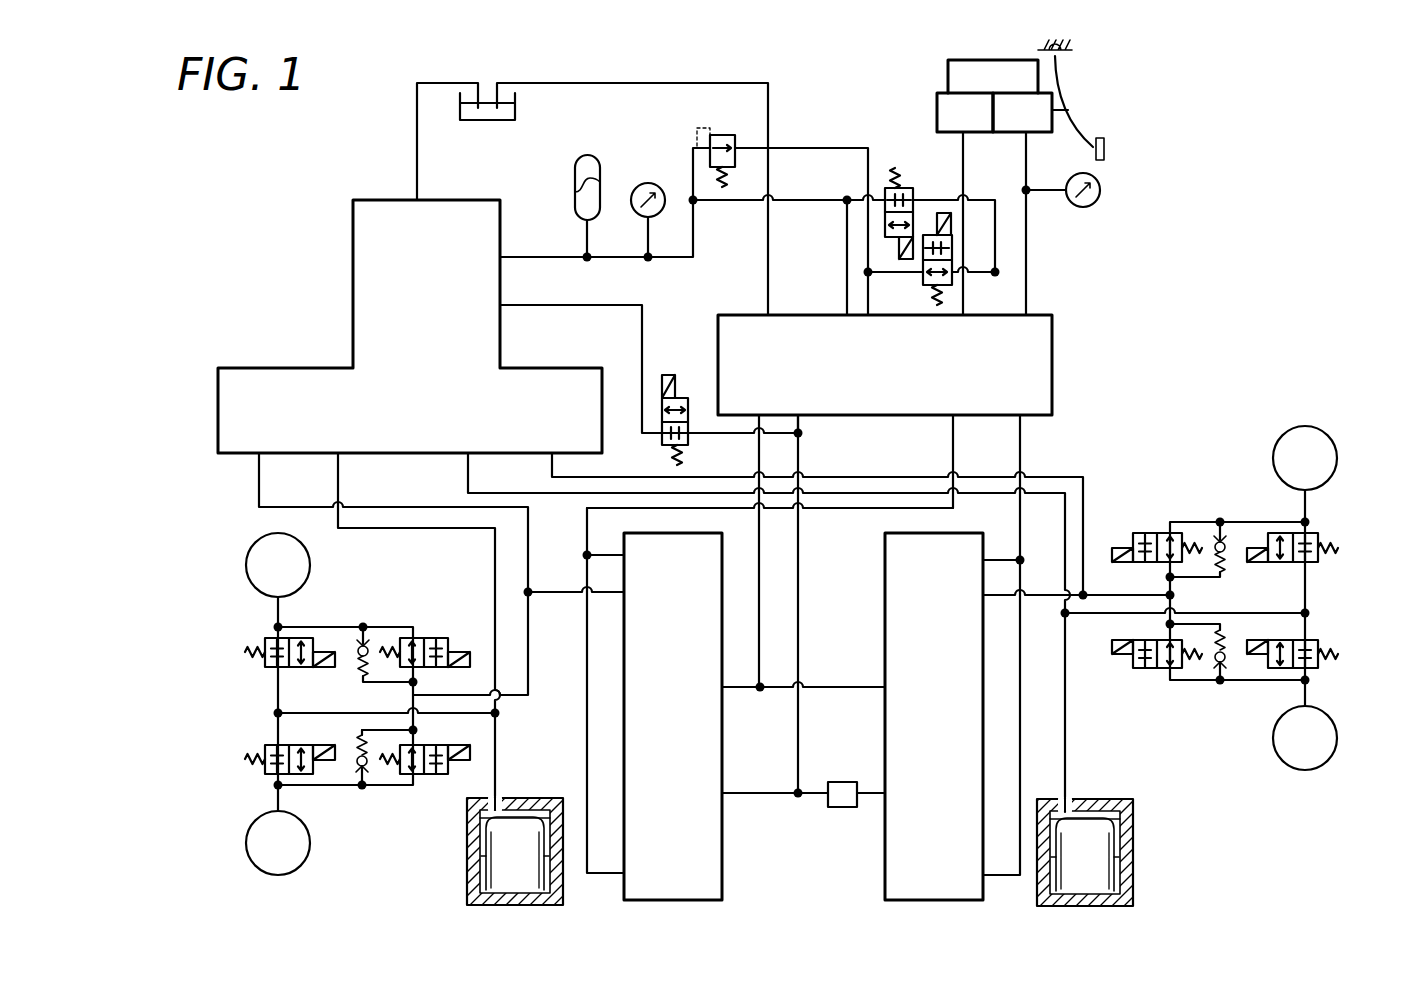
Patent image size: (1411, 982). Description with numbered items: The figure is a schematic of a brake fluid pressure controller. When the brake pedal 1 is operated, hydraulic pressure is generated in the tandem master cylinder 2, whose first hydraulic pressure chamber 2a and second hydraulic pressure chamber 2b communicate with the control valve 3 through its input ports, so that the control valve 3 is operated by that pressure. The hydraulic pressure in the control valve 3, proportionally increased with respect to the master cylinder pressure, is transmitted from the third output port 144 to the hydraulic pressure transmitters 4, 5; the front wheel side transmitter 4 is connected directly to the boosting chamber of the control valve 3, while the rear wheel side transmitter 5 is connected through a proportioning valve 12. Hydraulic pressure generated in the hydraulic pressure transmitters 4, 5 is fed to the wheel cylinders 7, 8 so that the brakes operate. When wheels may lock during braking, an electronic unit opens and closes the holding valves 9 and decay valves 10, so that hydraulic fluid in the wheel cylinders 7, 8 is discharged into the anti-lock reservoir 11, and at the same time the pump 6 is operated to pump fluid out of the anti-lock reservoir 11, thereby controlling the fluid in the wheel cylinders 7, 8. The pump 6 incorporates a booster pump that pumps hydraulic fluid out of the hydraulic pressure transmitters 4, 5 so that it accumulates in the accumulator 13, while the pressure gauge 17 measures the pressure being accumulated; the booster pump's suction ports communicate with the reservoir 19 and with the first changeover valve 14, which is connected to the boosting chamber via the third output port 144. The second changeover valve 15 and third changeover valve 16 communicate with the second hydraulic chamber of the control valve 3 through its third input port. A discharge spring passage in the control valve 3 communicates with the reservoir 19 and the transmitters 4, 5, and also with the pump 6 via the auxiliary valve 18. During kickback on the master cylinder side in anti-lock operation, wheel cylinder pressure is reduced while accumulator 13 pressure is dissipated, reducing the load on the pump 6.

The brake pedal 1 is at (1078, 116).
The tandem master cylinder 2 is at (939, 80).
The first hydraulic pressure chamber 2a is at (994, 133).
The second hydraulic pressure chamber 2b is at (937, 118).
The control valve 3 is at (1053, 355).
The hydraulic pressure transmitter 4 is at (722, 843).
The hydraulic pressure transmitter 5 is at (885, 885).
The pump 6 is at (344, 323).
The wheel cylinder 7 is at (247, 578).
The wheel cylinder 8 is at (1340, 455).
The holding valve 9 is at (445, 634).
The decay valve 10 is at (262, 668).
The anti-lock reservoir 11 is at (467, 886).
The proportioning valve 12 is at (838, 808).
The accumulator 13 is at (572, 162).
The first changeover valve 14 is at (690, 441).
The second changeover valve 15 is at (908, 186).
The third changeover valve 16 is at (921, 275).
The pressure gauge 17 is at (650, 182).
The auxiliary valve 18 is at (725, 135).
The reservoir 19 is at (516, 100).
The third output port 144 is at (800, 413).